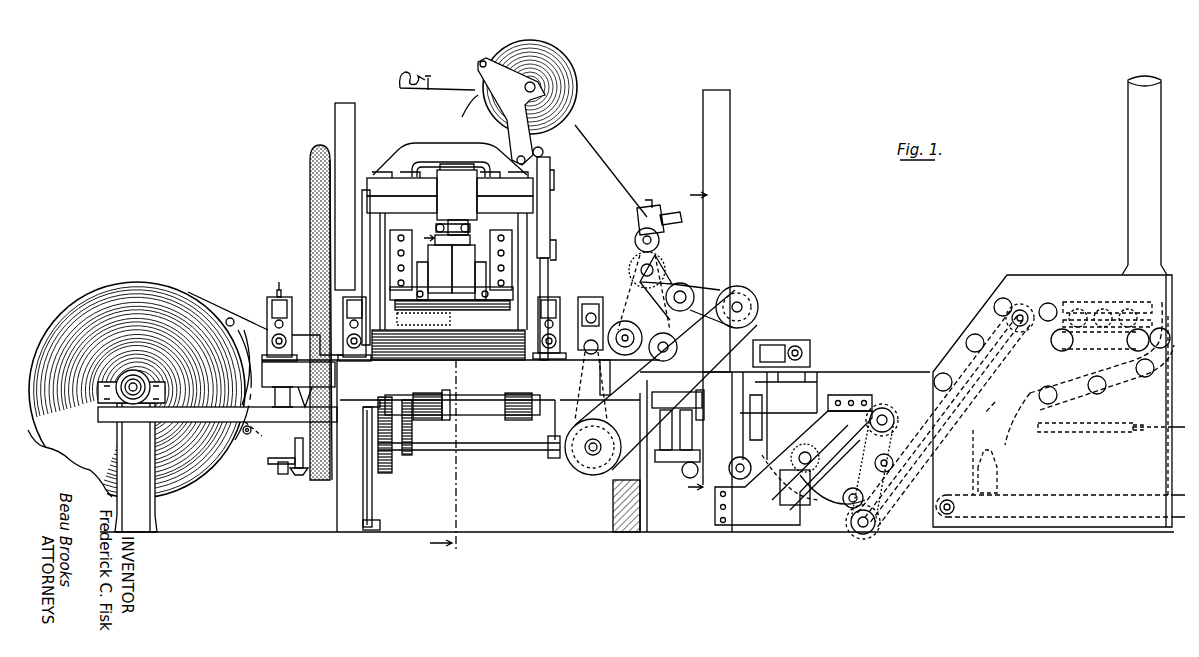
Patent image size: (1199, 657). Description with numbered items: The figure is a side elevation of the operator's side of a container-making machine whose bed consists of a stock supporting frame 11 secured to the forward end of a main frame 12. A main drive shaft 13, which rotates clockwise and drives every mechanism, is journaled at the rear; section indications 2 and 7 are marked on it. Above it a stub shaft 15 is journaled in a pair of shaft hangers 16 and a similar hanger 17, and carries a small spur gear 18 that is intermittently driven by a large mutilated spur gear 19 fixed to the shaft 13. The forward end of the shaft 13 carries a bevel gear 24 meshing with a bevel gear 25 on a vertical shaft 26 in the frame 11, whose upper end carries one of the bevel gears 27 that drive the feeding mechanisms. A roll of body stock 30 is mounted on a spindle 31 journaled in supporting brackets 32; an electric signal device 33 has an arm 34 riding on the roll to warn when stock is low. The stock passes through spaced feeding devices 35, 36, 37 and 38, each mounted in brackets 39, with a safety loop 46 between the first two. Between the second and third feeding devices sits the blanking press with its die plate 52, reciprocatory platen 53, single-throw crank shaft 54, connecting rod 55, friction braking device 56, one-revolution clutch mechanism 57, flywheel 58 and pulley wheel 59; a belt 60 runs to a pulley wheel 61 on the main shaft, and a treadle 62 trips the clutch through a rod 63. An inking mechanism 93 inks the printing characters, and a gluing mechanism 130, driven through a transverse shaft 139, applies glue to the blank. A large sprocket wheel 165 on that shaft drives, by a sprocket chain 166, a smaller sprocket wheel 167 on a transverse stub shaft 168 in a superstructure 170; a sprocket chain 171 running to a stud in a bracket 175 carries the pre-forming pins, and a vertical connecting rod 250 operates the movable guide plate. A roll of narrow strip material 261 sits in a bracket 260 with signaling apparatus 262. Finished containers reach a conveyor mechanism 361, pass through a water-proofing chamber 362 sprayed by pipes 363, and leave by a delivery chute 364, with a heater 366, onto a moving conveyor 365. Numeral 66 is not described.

The section line 2- 2 is at (434, 392).
The vertical column / section line 7 is at (702, 293).
The stock supporting frame 11 is at (145, 513).
The main frame 12 is at (480, 384).
The main drive shaft 13 is at (490, 452).
The stub shaft 15 is at (490, 415).
The shaft hangers 16 is at (518, 416).
The shaft hanger 17 is at (430, 418).
The small spur gear 18 is at (395, 450).
The large mutilated spur gear 19 is at (390, 472).
The bevel gear 24 is at (300, 476).
The bevel gear 25 is at (283, 475).
The vertical shaft 26 is at (275, 465).
The bevel gears 27 is at (317, 343).
The roll of body stock 30 is at (140, 290).
The spindle 31 is at (132, 379).
The supporting brackets 32 is at (146, 376).
The electric signal device 33 is at (217, 419).
The arm 34 is at (242, 348).
The feeding device 35 is at (279, 289).
The feeding device 36 is at (350, 297).
The feeding device 37 is at (548, 297).
The feeding device 38 is at (620, 320).
The brackets 39 is at (270, 318).
The loop 46 is at (303, 400).
The die plate 52 is at (451, 308).
The reciprocatory platen 53 is at (490, 340).
The single-throw crank shaft 54 is at (505, 185).
The connecting rod 55 is at (465, 218).
The friction braking device 56 is at (550, 210).
The one-revolution clutch mechanism 57 is at (402, 186).
The flywheel 58 is at (345, 205).
The pulley wheel 59 is at (310, 187).
The belt 60 is at (318, 201).
The pulley wheel 61 is at (366, 473).
The treadle 62 is at (365, 525).
The rod 63 is at (366, 490).
The die block 66 is at (440, 300).
The inking mechanism 93 is at (455, 308).
The gluing mechanism 130 is at (592, 304).
The transverse shaft 139 is at (593, 455).
The large sprocket wheel 165 is at (644, 423).
The sprocket chain 166 is at (659, 395).
The smaller sprocket wheel 167 is at (679, 426).
The transverse stub shaft 168 is at (682, 430).
The superstructure 170 is at (760, 308).
The sprocket chain 171 is at (770, 340).
The bracket 175 is at (795, 346).
The vertical connecting rod 250 is at (745, 410).
The bracket 260 is at (525, 137).
The roll of narrow strip material 261 is at (555, 120).
The signaling apparatus 262 is at (447, 90).
The conveyor mechanism 361 is at (993, 332).
The water-proofing chamber 362 is at (992, 292).
The pipes 363 is at (1082, 300).
The delivery chute 364 is at (1073, 398).
The moving conveyor 365 is at (1090, 493).
The heater 366 is at (1090, 433).